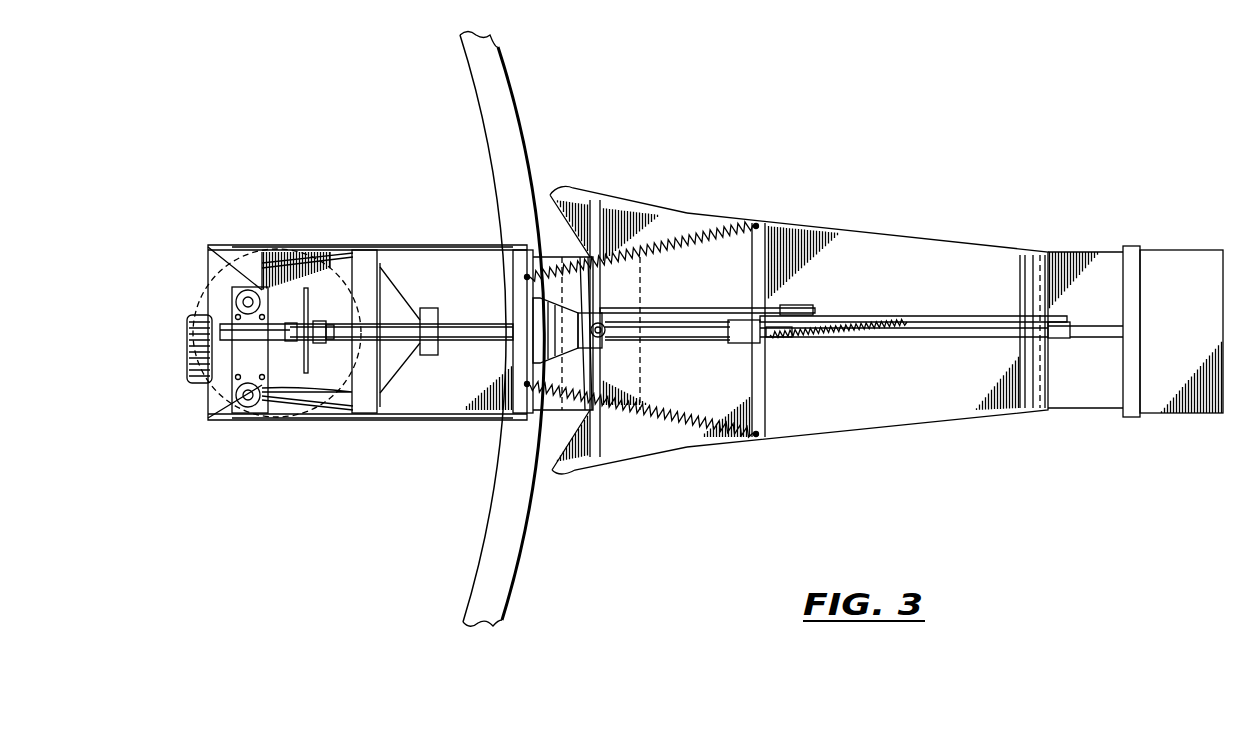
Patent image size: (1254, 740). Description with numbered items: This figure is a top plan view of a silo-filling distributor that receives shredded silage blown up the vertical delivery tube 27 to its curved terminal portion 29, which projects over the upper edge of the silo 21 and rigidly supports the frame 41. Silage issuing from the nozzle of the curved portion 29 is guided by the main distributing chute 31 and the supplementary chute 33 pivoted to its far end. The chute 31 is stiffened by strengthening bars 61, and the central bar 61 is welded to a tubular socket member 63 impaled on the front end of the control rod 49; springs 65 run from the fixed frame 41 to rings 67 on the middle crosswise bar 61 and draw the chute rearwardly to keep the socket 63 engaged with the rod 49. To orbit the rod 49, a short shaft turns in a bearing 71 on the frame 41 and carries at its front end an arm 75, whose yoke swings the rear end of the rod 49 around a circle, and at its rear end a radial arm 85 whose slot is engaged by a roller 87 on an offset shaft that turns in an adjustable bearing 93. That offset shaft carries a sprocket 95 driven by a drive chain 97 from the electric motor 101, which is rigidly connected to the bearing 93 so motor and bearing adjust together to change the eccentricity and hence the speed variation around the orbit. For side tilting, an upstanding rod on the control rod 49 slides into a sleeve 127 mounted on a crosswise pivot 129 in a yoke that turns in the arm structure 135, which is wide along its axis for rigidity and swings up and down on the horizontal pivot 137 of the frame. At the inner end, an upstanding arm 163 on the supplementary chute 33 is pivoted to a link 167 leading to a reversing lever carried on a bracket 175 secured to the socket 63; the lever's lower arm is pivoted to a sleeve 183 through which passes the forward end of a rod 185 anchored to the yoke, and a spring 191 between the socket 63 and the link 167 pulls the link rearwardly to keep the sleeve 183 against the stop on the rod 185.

The silo 21 is at (448, 80).
The delivery tube 27 is at (206, 300).
The curved terminal portion 29 is at (262, 263).
The main distributing chute 31 is at (866, 428).
The supplementary chute 33 is at (1170, 250).
The frame 41 is at (515, 292).
The control rod 49 is at (696, 343).
The strengthening bars 61 is at (950, 250).
The tubular socket member 63 is at (738, 344).
The springs 65 is at (700, 444).
The rings 67 is at (757, 224).
The bearing 71 is at (396, 306).
The arm 75 is at (430, 355).
The radial arm 85 is at (316, 322).
The roller 87 is at (316, 341).
The bearing 93 is at (222, 334).
The sprocket 95 is at (308, 375).
The drive chain 97 is at (296, 420).
The electric motor 101 is at (210, 370).
The sleeve 127 is at (606, 336).
The crosswise pivot 129 is at (592, 358).
The arm structure 135 is at (568, 308).
The horizontal pivot 137 is at (528, 341).
The upstanding arm 163 is at (1062, 337).
The link 167 is at (957, 317).
The bracket 175 is at (794, 334).
The sleeve 183 is at (792, 310).
The rod 185 is at (673, 309).
The spring 191 is at (872, 330).